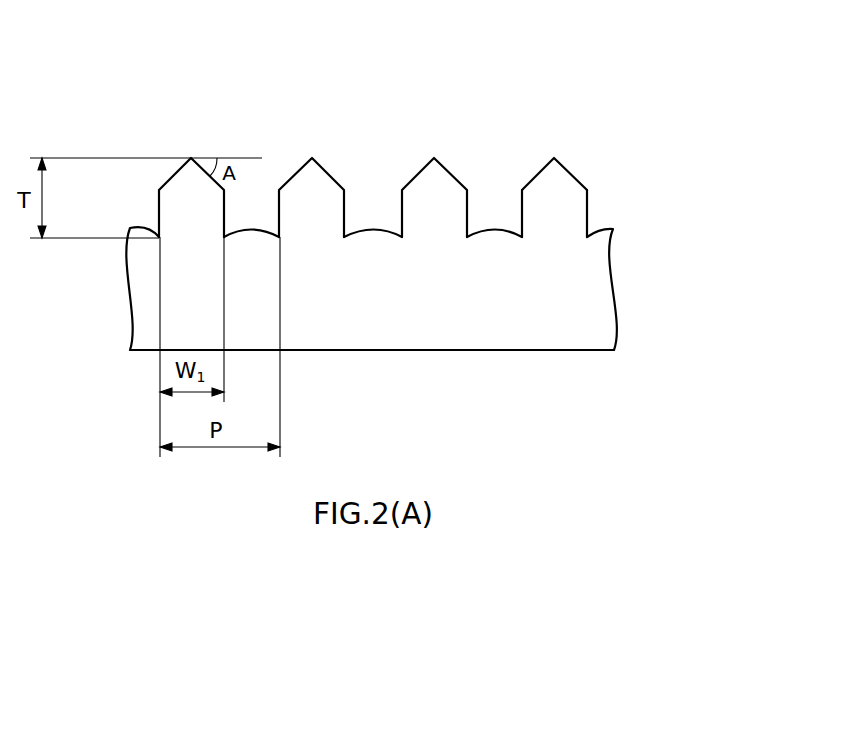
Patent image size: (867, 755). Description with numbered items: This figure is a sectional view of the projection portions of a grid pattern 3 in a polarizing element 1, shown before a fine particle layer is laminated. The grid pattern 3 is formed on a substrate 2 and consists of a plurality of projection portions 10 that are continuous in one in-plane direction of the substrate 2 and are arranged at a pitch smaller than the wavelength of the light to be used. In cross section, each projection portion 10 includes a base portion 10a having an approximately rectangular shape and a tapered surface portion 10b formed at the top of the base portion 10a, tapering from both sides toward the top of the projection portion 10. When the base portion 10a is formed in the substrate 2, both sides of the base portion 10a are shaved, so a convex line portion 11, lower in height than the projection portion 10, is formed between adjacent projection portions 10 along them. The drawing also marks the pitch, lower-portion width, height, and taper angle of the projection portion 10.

The polarizing element 1 is at (113, 45).
The substrate 2 is at (605, 307).
The grid pattern 3 is at (375, 105).
The projection portion 10 is at (709, 150).
The base portion 10a is at (572, 210).
The tapered surface portion 10b is at (570, 173).
The convex line portion 11 is at (495, 228).